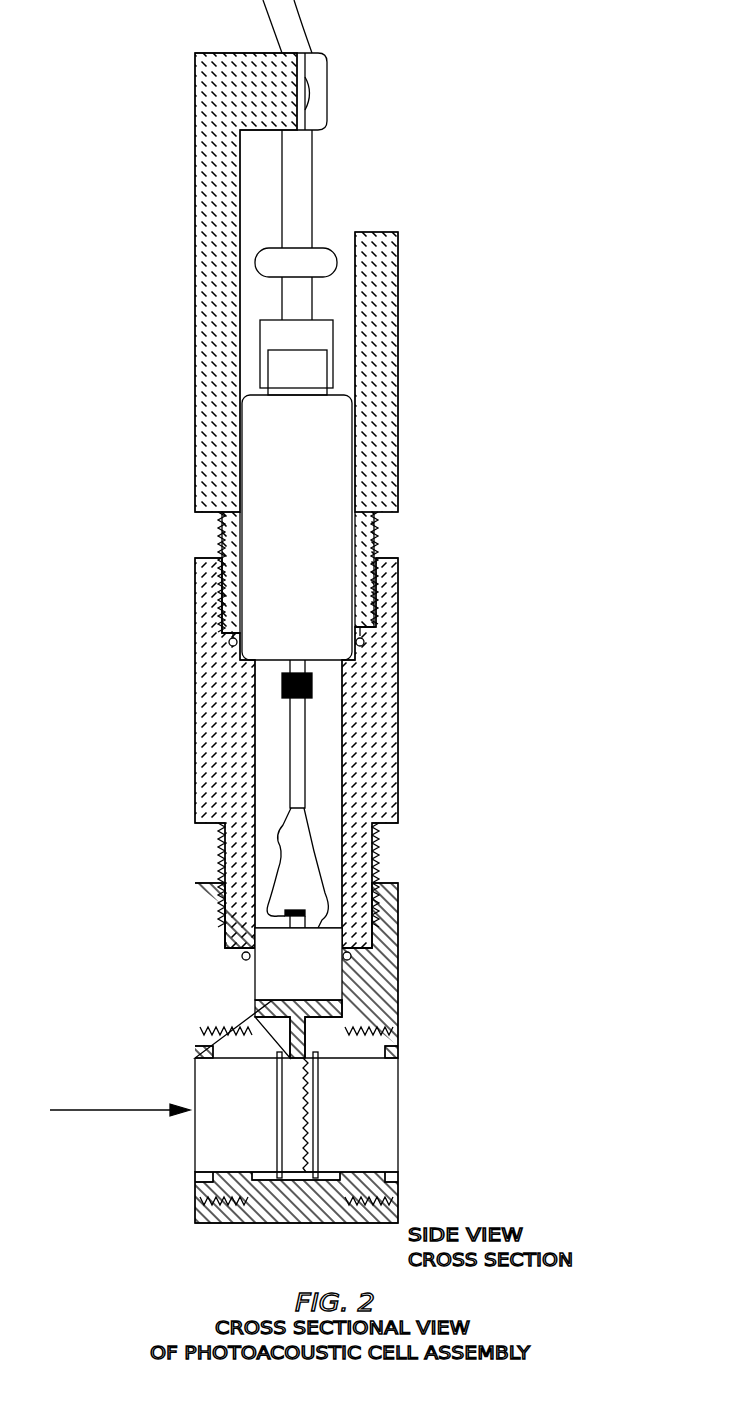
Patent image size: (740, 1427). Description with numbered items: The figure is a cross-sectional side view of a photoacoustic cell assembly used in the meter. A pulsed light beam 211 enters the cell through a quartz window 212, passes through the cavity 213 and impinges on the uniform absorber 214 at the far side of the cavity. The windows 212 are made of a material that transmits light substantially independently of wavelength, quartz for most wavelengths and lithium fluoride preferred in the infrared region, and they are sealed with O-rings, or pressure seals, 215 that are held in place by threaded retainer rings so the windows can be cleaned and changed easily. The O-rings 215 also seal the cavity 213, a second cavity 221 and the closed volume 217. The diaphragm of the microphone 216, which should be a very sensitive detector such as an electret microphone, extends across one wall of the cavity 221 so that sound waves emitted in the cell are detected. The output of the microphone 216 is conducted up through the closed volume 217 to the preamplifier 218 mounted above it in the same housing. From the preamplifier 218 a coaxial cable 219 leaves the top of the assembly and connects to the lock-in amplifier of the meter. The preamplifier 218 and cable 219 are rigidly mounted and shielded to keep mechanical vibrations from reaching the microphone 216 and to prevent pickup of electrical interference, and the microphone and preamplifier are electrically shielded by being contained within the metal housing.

The pulsed light beam 211 is at (148, 1108).
The quartz window 212 is at (277, 1075).
The cavity 213 is at (282, 1120).
The uniform absorber 214 is at (307, 1158).
The O-rings 215 is at (228, 1042).
The microphone 216 is at (343, 995).
The closed volume 217 is at (336, 828).
The preamplifier 218 is at (350, 396).
The coaxial cable 219 is at (312, 29).
The cavity 221 is at (343, 1014).